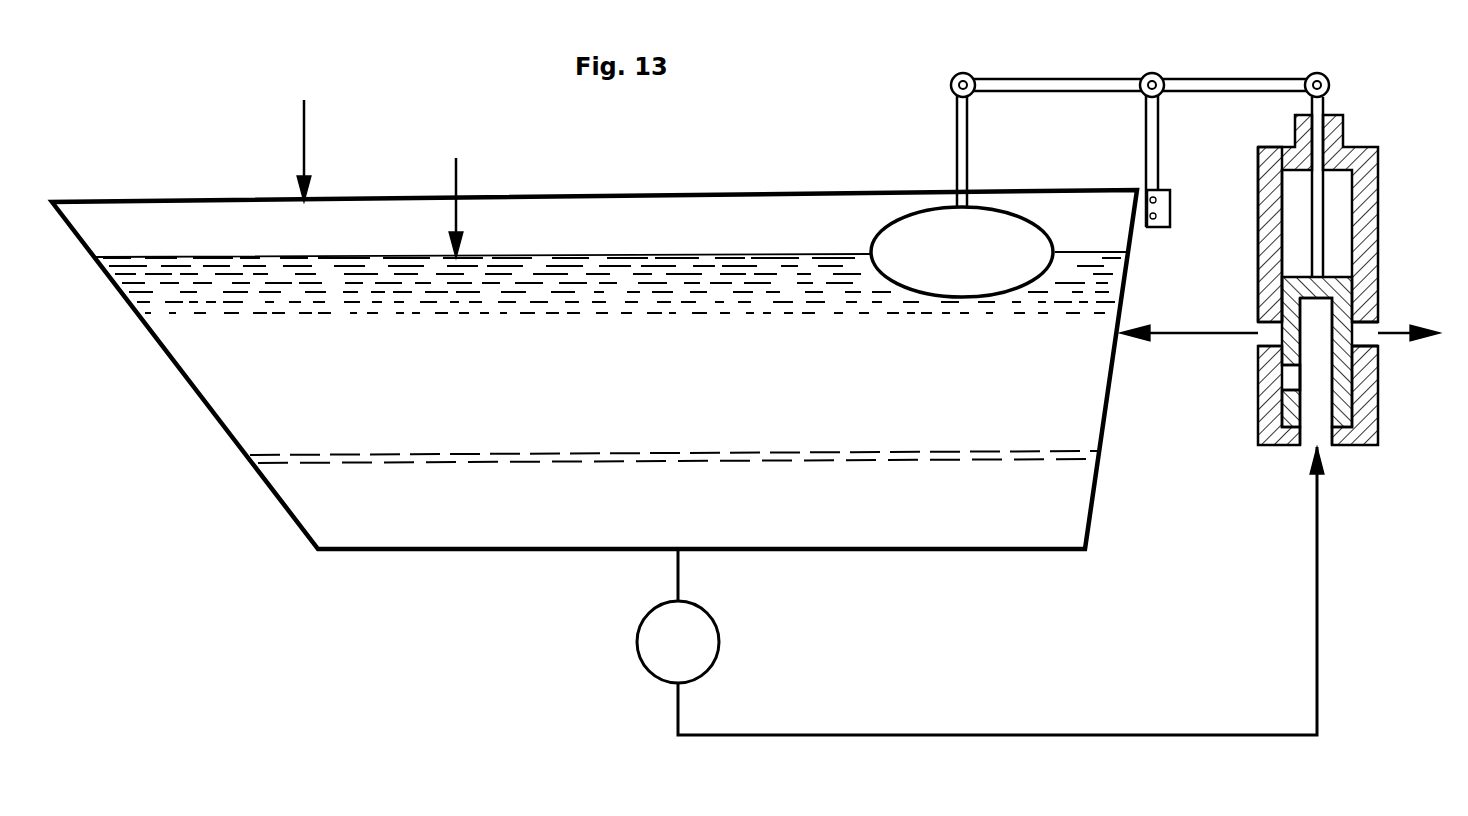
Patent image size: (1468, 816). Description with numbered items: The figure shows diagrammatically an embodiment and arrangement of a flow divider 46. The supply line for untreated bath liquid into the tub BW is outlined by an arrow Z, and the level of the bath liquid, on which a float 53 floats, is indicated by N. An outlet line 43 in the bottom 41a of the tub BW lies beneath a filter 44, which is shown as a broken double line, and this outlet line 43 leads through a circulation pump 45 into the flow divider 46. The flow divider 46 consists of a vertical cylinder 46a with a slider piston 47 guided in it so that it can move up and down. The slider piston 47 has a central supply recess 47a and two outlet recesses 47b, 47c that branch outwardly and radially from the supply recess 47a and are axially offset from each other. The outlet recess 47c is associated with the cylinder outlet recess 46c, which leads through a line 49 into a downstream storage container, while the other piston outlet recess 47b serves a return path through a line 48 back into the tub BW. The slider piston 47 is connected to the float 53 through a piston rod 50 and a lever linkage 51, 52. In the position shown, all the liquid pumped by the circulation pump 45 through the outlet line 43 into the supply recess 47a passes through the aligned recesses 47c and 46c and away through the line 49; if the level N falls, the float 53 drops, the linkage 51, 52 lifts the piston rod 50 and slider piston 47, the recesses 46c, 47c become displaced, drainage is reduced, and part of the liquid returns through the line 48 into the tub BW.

The bottom of the tub 41a is at (468, 551).
The outlet line 43 is at (681, 580).
The filter 44 is at (338, 462).
The circulation pump 45 is at (690, 641).
The flow divider 46 is at (1265, 407).
The vertical cylinder 46a is at (1268, 222).
The outlet recess 46c is at (1265, 331).
The slider piston 47 is at (1343, 407).
The central supply recess 47a is at (1315, 407).
The outlet recess 47b is at (1278, 371).
The outlet recess 47c is at (1378, 324).
The line 48 is at (1168, 337).
The line 49 is at (1370, 335).
The piston rod 50 is at (1318, 227).
The lever linkage 51 is at (1220, 82).
The lever linkage 52 is at (958, 148).
The float 53 is at (920, 237).
The tub BW is at (237, 378).
The arrow Z is at (312, 151).
The level of the bath liquid N is at (464, 208).